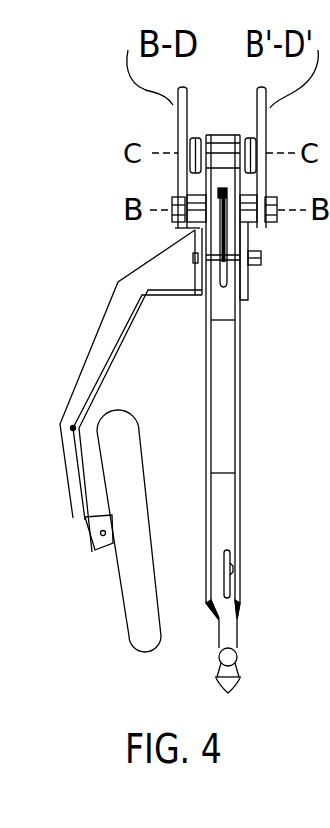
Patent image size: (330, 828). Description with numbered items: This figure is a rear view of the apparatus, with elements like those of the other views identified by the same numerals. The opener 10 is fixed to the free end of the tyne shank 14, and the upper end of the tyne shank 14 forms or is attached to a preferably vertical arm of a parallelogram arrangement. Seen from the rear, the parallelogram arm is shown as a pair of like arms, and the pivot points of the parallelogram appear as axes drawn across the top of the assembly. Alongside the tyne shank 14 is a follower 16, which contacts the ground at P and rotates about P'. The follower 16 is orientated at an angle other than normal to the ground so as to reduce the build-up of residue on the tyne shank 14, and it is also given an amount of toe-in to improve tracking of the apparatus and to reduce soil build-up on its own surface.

The opener 10 is at (243, 641).
The tyne shank 14 is at (230, 455).
The follower 16 is at (125, 585).
The ground contact point P is at (152, 673).
The pivot point P' is at (75, 534).